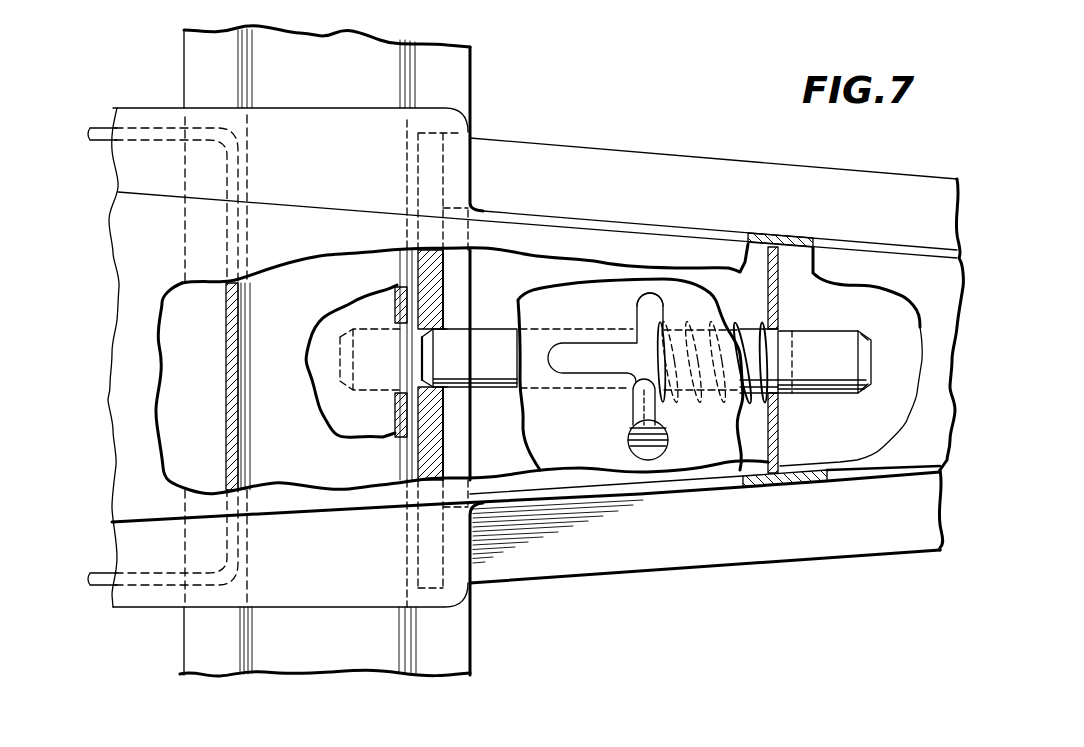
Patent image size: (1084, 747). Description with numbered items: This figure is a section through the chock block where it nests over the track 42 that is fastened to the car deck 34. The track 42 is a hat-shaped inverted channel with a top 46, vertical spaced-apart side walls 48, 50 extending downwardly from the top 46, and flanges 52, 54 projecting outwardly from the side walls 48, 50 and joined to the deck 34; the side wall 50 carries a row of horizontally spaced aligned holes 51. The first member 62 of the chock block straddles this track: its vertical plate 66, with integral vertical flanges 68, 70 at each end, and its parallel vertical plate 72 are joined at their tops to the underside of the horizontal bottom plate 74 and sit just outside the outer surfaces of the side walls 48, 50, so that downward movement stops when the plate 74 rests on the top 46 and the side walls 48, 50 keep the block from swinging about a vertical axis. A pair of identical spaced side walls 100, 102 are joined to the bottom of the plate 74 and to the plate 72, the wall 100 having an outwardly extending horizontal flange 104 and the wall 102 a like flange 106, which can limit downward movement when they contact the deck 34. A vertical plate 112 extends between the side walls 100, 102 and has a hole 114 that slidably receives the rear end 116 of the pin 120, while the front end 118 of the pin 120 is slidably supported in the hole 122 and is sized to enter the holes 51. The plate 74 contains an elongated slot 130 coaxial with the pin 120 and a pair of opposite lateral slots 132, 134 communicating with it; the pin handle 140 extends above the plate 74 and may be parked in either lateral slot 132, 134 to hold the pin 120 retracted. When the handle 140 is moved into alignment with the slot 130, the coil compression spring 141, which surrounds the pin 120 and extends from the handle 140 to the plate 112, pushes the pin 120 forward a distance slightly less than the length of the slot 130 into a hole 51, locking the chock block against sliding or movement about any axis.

The deck 34 is at (571, 12).
The track 42 is at (479, 99).
The top 46 is at (307, 50).
The side wall 48 is at (245, 633).
The side wall 50 is at (370, 297).
The holes 51 is at (400, 367).
The flange 52 is at (200, 55).
The flange 54 is at (448, 53).
The first member 62 is at (211, 315).
The vertical plate 66 is at (240, 181).
The vertical flange 68 is at (103, 126).
The vertical flange 70 is at (102, 587).
The vertical plate 72 is at (438, 278).
The horizontal bottom plate 74 is at (325, 132).
The side wall 100 is at (800, 485).
The side wall 102 is at (798, 237).
The horizontal flange 104 is at (733, 550).
The horizontal flange 106 is at (643, 163).
The vertical plate 112 is at (778, 430).
The hole 114 is at (778, 328).
The rear end 116 is at (833, 345).
The front end 118 is at (482, 380).
The pin 120 is at (882, 346).
The hole 122 is at (448, 322).
The elongated slot 130 is at (570, 357).
The lateral slot 132 is at (637, 302).
The lateral slot 134 is at (633, 405).
The pin handle 140 is at (662, 407).
The coil compression spring 141 is at (737, 320).